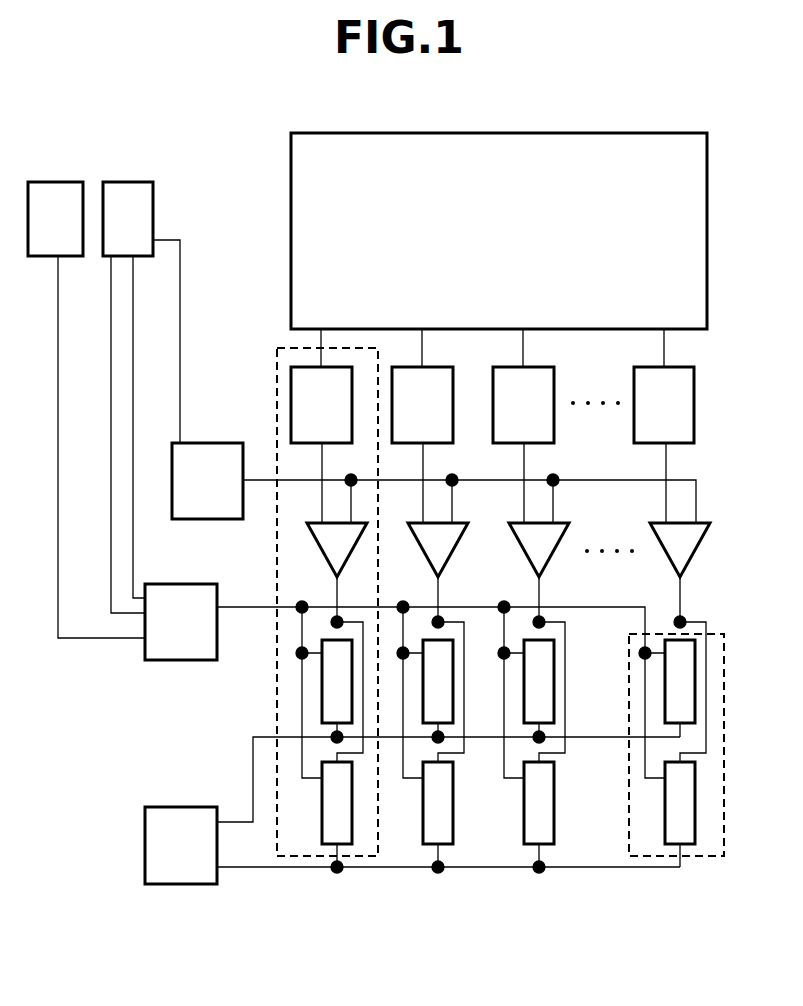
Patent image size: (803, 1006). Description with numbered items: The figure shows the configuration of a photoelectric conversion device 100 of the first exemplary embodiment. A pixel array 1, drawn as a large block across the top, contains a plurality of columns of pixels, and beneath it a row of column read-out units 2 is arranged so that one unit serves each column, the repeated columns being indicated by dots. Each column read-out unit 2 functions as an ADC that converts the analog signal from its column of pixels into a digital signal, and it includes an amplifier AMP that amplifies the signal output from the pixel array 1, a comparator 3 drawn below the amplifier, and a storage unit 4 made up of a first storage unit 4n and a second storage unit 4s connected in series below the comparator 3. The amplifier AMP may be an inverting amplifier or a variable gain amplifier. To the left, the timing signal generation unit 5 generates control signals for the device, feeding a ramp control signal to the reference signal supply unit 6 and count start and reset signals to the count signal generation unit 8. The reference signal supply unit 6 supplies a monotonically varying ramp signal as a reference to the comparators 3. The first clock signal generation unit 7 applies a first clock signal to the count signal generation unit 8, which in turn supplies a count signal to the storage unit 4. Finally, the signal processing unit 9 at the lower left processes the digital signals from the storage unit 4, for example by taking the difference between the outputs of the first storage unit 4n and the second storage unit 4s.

The photoelectric conversion device 100 is at (468, 974).
The pixel array 1 is at (291, 230).
The column read-out unit 2 is at (309, 634).
The comparator 3 is at (314, 555).
The storage unit 4 is at (700, 777).
The first storage unit 4n is at (695, 683).
The second storage unit 4s is at (695, 810).
The timing signal generation unit 5 is at (131, 182).
The reference signal supply unit 6 is at (208, 519).
The first clock signal generation unit 7 is at (56, 182).
The count signal generation unit 8 is at (185, 660).
The signal processing unit 9 is at (185, 884).
The amplifier AMP is at (291, 403).